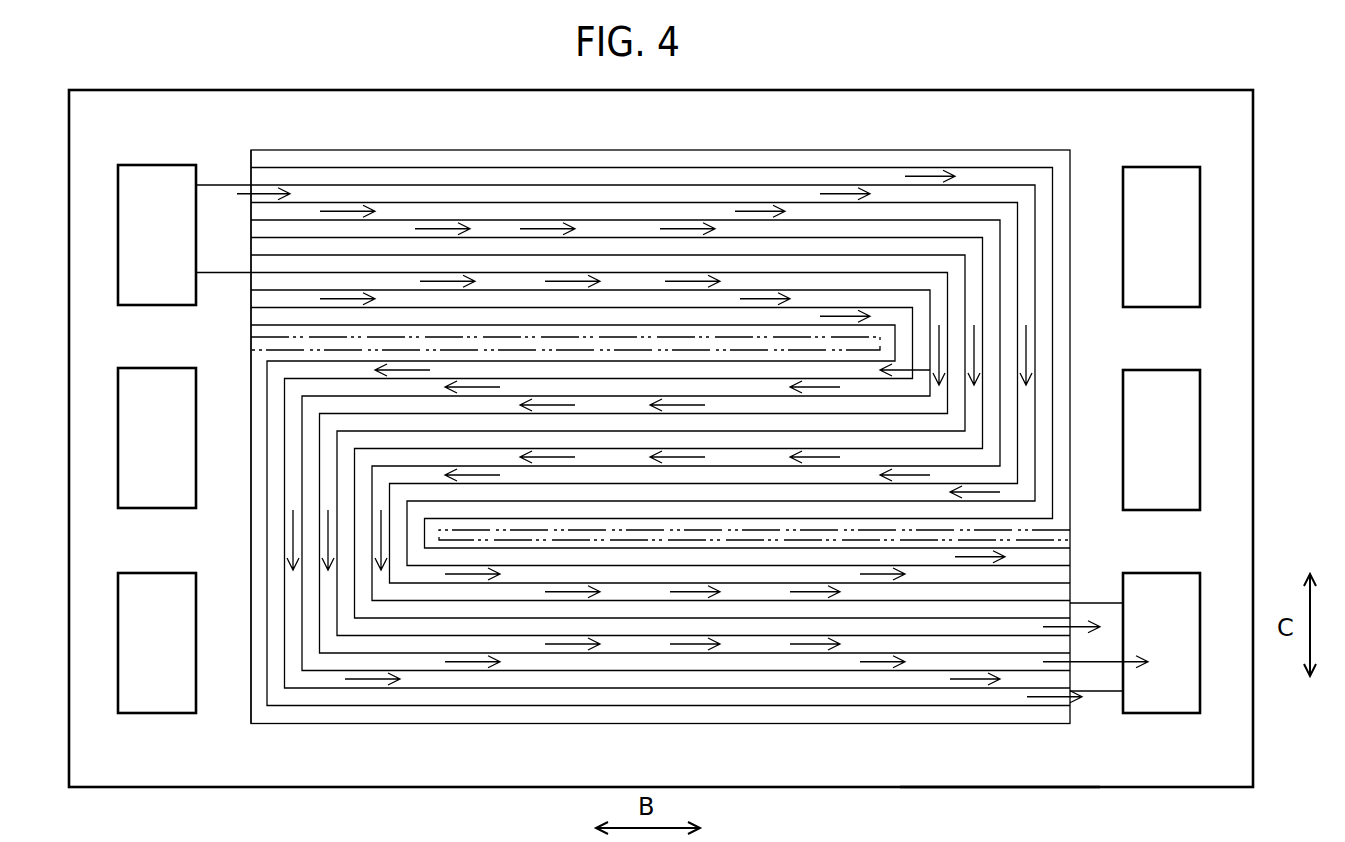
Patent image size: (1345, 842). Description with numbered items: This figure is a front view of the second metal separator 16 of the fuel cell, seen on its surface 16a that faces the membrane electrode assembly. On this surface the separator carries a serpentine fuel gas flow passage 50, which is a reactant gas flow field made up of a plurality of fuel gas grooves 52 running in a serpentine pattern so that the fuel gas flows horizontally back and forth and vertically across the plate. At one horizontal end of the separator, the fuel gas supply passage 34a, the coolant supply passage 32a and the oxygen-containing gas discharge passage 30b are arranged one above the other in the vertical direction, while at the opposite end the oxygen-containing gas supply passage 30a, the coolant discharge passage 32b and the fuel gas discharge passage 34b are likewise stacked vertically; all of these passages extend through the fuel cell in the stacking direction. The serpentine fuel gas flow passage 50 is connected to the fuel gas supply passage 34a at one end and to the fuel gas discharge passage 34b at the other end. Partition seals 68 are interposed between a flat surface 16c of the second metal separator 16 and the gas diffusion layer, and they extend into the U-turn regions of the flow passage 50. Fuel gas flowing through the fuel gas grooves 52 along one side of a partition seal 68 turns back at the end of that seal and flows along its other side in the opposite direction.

The second metal separator 16 is at (967, 71).
The surface 16a is at (987, 766).
The flat surface 16c is at (251, 342).
The serpentine fuel gas flow passage 50 is at (622, 196).
The fuel gas grooves 52 is at (480, 212).
The partition seals 68 is at (690, 338).
The fuel gas supply passage 34a is at (184, 235).
The fuel gas discharge passage 34b is at (1135, 643).
The oxygen-containing gas supply passage 30a is at (1161, 237).
The oxygen-containing gas discharge passage 30b is at (157, 643).
The coolant supply passage 32a is at (157, 438).
The coolant discharge passage 32b is at (1161, 440).